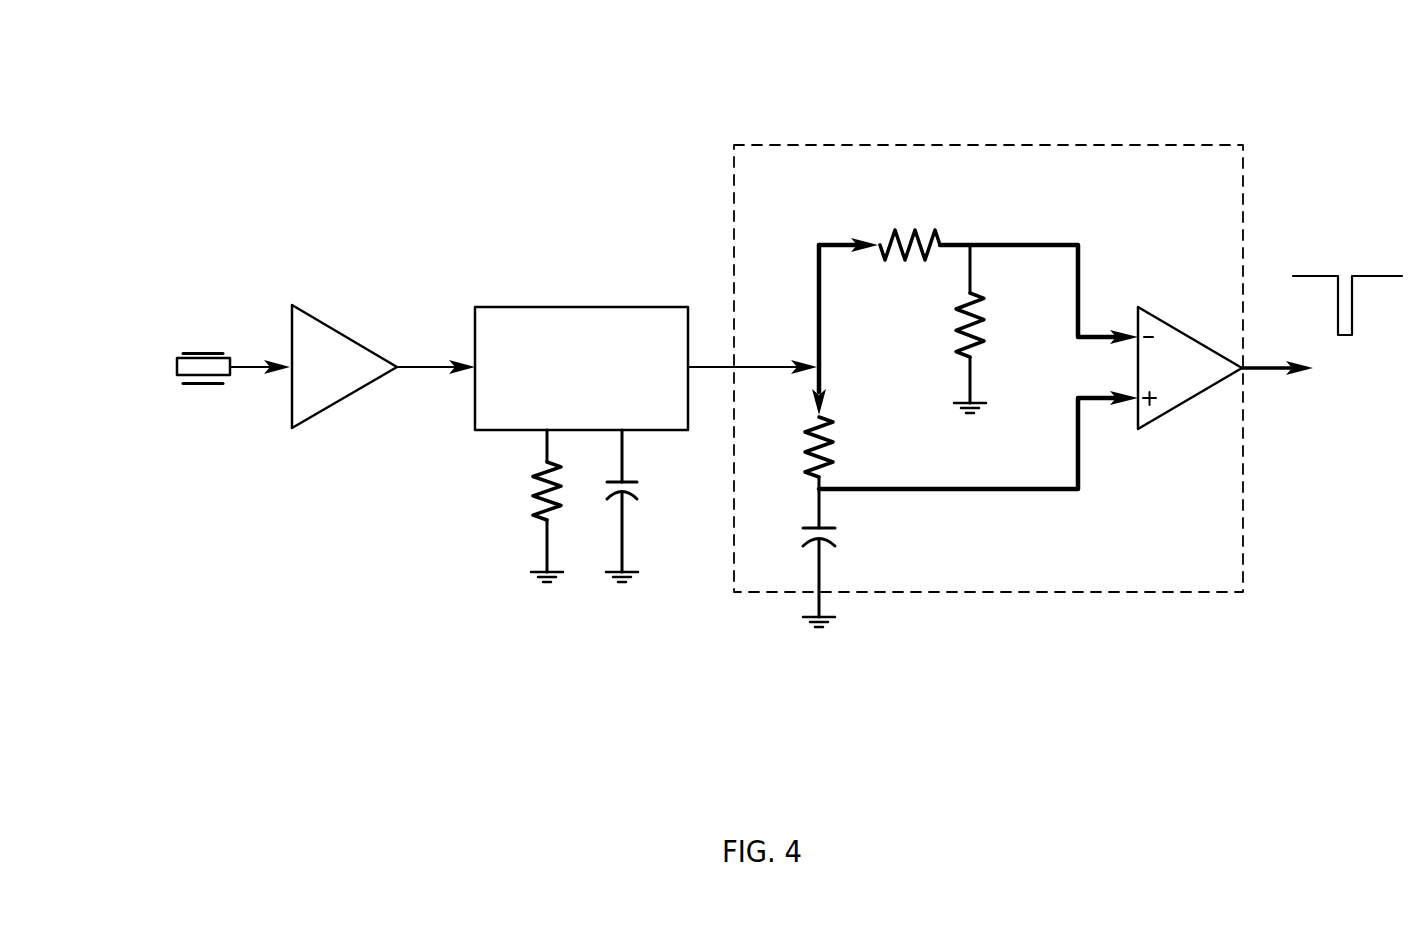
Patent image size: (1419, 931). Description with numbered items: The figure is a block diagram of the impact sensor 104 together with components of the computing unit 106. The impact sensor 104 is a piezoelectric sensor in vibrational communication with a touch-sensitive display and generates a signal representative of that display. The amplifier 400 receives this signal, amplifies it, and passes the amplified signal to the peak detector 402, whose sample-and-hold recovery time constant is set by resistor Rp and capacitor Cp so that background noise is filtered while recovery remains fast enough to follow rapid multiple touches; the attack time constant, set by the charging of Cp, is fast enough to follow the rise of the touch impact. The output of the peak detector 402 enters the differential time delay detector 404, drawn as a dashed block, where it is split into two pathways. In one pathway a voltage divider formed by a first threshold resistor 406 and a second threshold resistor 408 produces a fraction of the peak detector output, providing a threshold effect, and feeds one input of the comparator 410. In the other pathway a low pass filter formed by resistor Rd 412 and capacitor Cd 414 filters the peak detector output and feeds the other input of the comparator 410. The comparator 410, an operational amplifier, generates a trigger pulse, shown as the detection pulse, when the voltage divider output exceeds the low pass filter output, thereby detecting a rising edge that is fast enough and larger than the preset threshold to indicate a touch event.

The computing unit 106 is at (222, 203).
The impact sensor 104 is at (177, 360).
The amplifier 400 is at (343, 333).
The peak detector 402 is at (606, 415).
The differential time delay detector 404 is at (733, 188).
The resistor Rt1 406 is at (935, 233).
The resistor Rt2 408 is at (960, 310).
The comparator 410 is at (1173, 323).
The resistor Rd 412 is at (824, 420).
The capacitor Cd 414 is at (831, 528).